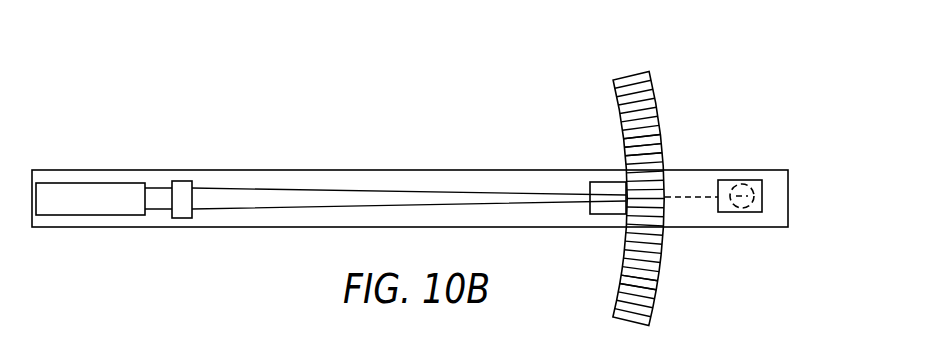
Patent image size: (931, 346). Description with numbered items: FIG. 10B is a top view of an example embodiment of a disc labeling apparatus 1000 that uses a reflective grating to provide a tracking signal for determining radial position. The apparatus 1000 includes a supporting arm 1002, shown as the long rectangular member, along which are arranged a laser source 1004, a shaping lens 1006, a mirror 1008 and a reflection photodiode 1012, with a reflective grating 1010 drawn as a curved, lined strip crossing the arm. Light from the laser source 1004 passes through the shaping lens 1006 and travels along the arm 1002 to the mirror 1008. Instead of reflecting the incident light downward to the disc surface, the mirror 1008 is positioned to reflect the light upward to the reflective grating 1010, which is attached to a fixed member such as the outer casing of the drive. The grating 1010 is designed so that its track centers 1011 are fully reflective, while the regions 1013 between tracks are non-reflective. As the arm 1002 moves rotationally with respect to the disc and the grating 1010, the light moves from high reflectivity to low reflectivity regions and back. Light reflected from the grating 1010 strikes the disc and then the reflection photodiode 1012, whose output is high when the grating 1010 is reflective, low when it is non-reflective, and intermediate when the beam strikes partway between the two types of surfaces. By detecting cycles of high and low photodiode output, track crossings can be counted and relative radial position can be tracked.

The disc labeling apparatus 1000 is at (222, 106).
The supporting arm 1002 is at (65, 171).
The laser source 1004 is at (90, 182).
The shaping lens 1006 is at (182, 180).
The mirror 1008 is at (598, 172).
The reflective grating 1010 is at (657, 100).
The track centers 1011 is at (652, 244).
The reflection photodiode 1012 is at (733, 170).
The regions between tracks 1013 is at (643, 275).